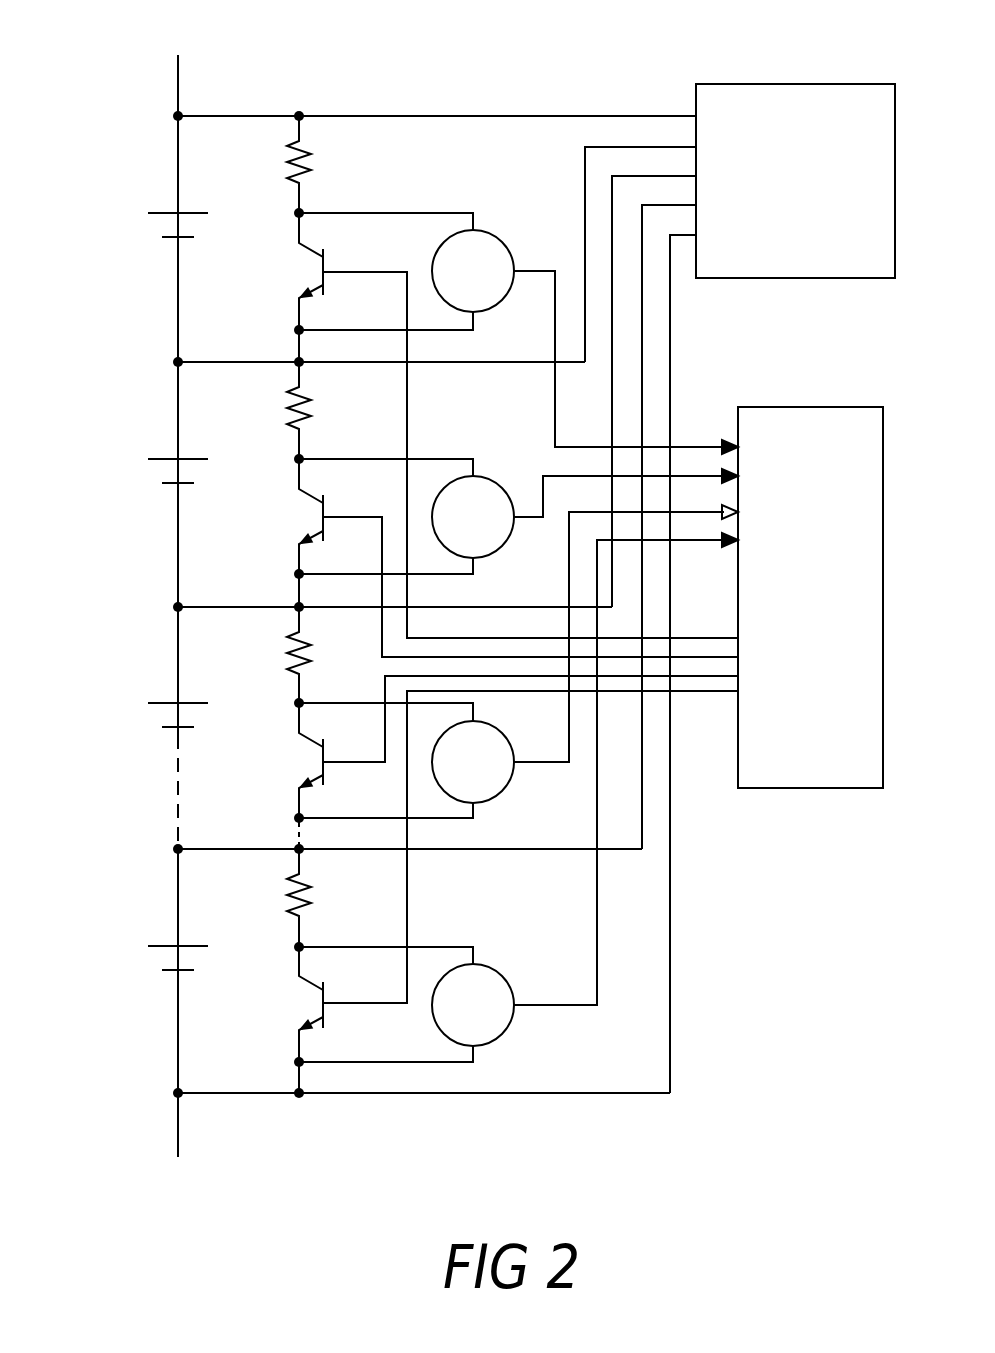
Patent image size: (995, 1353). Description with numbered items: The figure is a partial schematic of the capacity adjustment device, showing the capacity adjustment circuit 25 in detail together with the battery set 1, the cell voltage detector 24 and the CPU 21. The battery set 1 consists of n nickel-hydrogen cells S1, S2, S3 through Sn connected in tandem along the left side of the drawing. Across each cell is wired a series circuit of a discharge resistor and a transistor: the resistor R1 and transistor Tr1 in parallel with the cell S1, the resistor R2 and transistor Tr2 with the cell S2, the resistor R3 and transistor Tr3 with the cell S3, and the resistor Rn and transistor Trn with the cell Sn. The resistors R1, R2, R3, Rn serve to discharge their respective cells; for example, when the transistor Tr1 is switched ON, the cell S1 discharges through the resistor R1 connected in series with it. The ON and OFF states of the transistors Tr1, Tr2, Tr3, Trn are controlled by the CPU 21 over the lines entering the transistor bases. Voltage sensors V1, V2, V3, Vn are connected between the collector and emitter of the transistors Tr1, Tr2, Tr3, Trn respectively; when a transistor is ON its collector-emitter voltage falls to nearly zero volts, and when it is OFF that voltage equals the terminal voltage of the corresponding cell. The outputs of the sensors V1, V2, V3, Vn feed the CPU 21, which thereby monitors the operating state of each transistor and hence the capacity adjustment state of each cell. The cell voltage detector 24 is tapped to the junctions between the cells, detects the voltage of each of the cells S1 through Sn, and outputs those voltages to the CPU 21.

The battery set 1 is at (126, 606).
The capacity adjustment circuit 25 is at (452, 106).
The cell voltage detector 24 is at (788, 84).
The CPU 21 is at (793, 407).
The cell S1 is at (148, 239).
The cell S2 is at (148, 485).
The cell S3 is at (148, 725).
The cell Sn is at (148, 972).
The resistor R1 is at (324, 164).
The resistor R2 is at (324, 410).
The resistor R3 is at (324, 655).
The resistor Rn is at (324, 898).
The transistor Tr1 is at (485, 425).
The transistor Tr2 is at (485, 558).
The transistor Tr3 is at (485, 762).
The transistor Trn is at (485, 892).
The voltage sensor V1 is at (512, 252).
The voltage sensor V2 is at (508, 490).
The voltage sensor V3 is at (492, 797).
The voltage sensor Vn is at (512, 987).